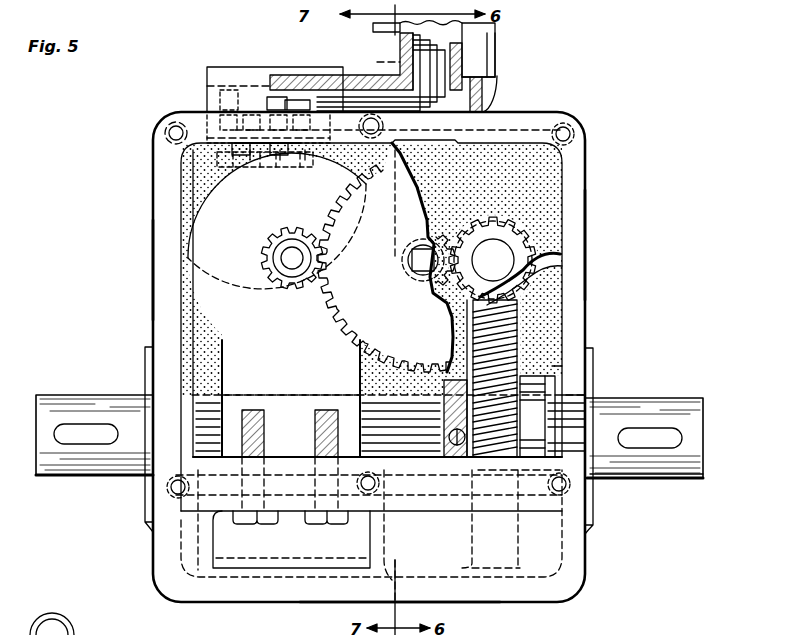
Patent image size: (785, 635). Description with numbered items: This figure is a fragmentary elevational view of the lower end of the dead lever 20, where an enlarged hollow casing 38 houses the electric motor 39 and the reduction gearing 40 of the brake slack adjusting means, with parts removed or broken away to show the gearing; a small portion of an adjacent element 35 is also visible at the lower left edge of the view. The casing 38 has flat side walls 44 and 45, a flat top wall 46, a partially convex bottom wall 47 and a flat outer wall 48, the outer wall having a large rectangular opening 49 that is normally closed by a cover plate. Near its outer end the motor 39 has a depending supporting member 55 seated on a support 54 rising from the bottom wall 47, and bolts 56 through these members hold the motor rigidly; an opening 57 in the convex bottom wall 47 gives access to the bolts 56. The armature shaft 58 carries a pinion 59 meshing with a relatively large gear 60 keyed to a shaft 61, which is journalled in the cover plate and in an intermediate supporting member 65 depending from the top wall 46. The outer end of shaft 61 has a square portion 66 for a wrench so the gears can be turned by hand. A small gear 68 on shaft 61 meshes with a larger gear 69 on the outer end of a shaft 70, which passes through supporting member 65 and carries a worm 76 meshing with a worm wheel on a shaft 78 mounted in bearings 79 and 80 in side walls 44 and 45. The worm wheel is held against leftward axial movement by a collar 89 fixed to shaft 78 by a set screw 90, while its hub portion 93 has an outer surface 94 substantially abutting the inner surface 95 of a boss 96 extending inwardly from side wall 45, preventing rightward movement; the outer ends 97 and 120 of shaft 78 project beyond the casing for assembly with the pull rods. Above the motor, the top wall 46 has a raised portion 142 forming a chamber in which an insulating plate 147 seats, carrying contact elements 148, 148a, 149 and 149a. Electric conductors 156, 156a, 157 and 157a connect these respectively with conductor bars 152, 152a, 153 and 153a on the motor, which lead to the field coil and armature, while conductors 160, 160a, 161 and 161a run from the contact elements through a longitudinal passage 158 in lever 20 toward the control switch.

The dead lever 20 is at (483, 66).
The coupling 35 is at (34, 632).
The casing 38 is at (574, 126).
The electric motor 39 is at (214, 318).
The reduction gearing 40 is at (490, 188).
The side wall 44 is at (152, 267).
The side wall 45 is at (576, 237).
The top wall 46 is at (498, 128).
The bottom wall 47 is at (440, 603).
The outer wall 48 is at (200, 495).
The rectangular opening 49 is at (195, 310).
The support 54 is at (362, 444).
The supporting member 55 is at (350, 412).
The bolts 56 is at (246, 524).
The opening 57 is at (232, 570).
The armature shaft 58 is at (287, 248).
The pinion 59 is at (295, 287).
The gear 60 is at (394, 362).
The shaft 61 is at (420, 246).
The intermediate supporting member 65 is at (545, 166).
The square portion 66 is at (412, 260).
The small gear 68 is at (440, 242).
The gear 69 is at (513, 232).
The shaft 70 is at (545, 233).
The worm 76 is at (540, 270).
The shaft 78 is at (698, 434).
The bearing 79 is at (146, 365).
The bearing 80 is at (592, 478).
The collar 89 is at (458, 408).
The set screw 90 is at (449, 437).
The hub portion 93 is at (528, 370).
The outer surface 94 is at (545, 366).
The inner surface 95 is at (560, 395).
The boss 96 is at (553, 370).
The outer end 97 is at (105, 466).
The outer end 120 is at (660, 479).
The raised portion 142 is at (208, 70).
The plate 147 is at (215, 113).
The contact element 148 is at (222, 95).
The contact element 148a is at (245, 100).
The contact element 149 is at (275, 108).
The contact element 149a is at (302, 108).
The conductor bar 152 is at (240, 160).
The conductor bar 152a is at (255, 165).
The conductor bar 153 is at (280, 165).
The conductor bar 153a is at (308, 165).
The electric conductor 156 is at (226, 150).
The electric conductor 156a is at (236, 140).
The electric conductor 157 is at (300, 130).
The electric conductor 157a is at (302, 143).
The passage 158 is at (420, 48).
The conductor 160 is at (396, 38).
The conductor 160a is at (410, 70).
The conductor 161 is at (468, 42).
The conductor 161a is at (462, 54).